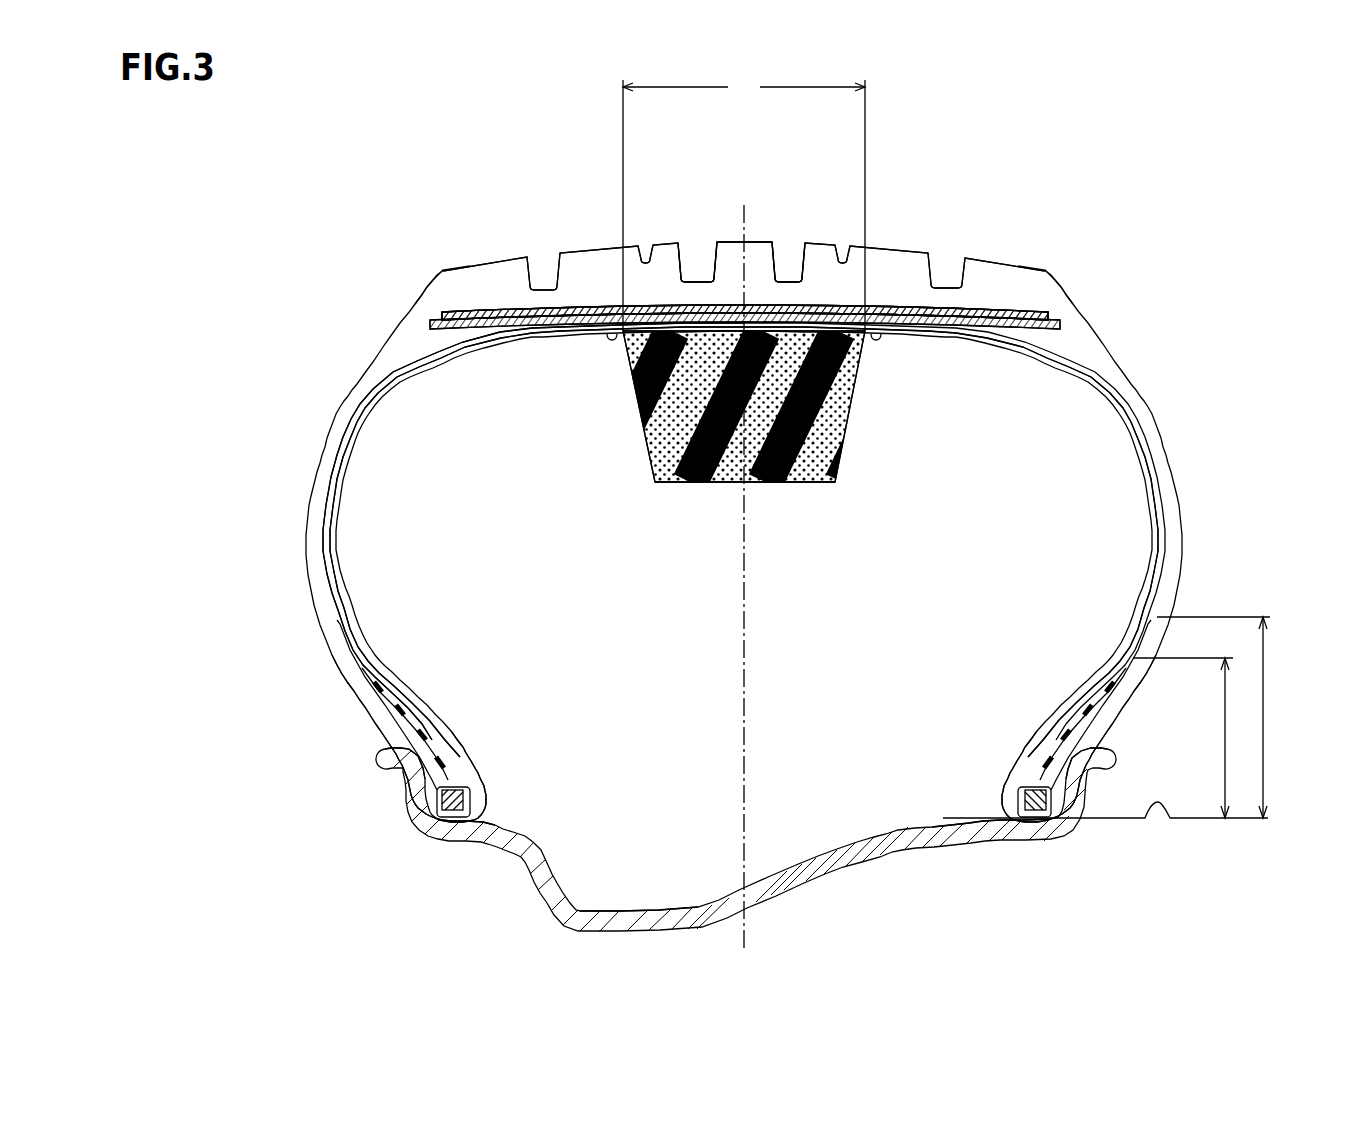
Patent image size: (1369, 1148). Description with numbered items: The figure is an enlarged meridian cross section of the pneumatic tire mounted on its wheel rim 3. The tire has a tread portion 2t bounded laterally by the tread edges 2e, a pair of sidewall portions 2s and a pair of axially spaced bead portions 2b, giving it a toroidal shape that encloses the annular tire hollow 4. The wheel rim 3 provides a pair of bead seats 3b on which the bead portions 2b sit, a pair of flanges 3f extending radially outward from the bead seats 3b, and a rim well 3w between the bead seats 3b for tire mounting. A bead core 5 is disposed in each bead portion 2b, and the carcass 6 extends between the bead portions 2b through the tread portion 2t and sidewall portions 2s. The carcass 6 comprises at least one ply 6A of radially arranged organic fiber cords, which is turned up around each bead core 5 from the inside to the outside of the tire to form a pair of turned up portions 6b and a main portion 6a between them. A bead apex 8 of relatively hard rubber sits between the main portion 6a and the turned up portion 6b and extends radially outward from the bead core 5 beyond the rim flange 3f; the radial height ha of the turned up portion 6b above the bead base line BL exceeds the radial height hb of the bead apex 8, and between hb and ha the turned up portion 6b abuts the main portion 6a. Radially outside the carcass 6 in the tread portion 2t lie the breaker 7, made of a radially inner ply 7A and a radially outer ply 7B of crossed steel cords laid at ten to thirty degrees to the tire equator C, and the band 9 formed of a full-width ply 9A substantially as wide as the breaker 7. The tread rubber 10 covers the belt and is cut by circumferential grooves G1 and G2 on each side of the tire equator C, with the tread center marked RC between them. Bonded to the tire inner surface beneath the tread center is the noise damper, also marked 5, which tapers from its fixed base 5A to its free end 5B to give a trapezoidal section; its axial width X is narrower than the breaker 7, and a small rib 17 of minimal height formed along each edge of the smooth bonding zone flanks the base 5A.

The tread portion 2t is at (915, 243).
The tread edge 2e is at (443, 270).
The sidewall portion 2s is at (289, 530).
The bead portion 2b is at (470, 746).
The wheel rim 3 is at (1068, 843).
The bead seat 3b is at (453, 833).
The rim flange 3f is at (403, 765).
The rim well 3w is at (667, 911).
The tire hollow 4 is at (490, 565).
The bead core 5 is at (463, 802).
The fixed base of noise damper 5A is at (802, 331).
The free end of noise damper 5B is at (703, 485).
The carcass 6 is at (533, 531).
The carcass ply 6A is at (1043, 535).
The main portion of carcass ply 6a is at (1160, 547).
The turned up portion of carcass ply 6b is at (1147, 632).
The breaker 7 is at (619, 436).
The radially inner breaker ply 7A is at (557, 330).
The radially outer breaker ply 7B is at (606, 330).
The bead apex 8 is at (417, 720).
The band 9 is at (488, 303).
The full-width band ply 9A is at (745, 312).
The tread rubber 10 is at (603, 257).
The small rib 17 is at (876, 339).
The axial width of noise damper X is at (744, 200).
The crown rib RC is at (759, 242).
The circumferential groove G1 is at (700, 258).
The circumferential groove G2 is at (787, 256).
The tire equator C is at (744, 560).
The bead base line BL is at (1160, 808).
The radial height of turned up portion ha is at (1221, 717).
The radial height of bead apex hb is at (1187, 738).